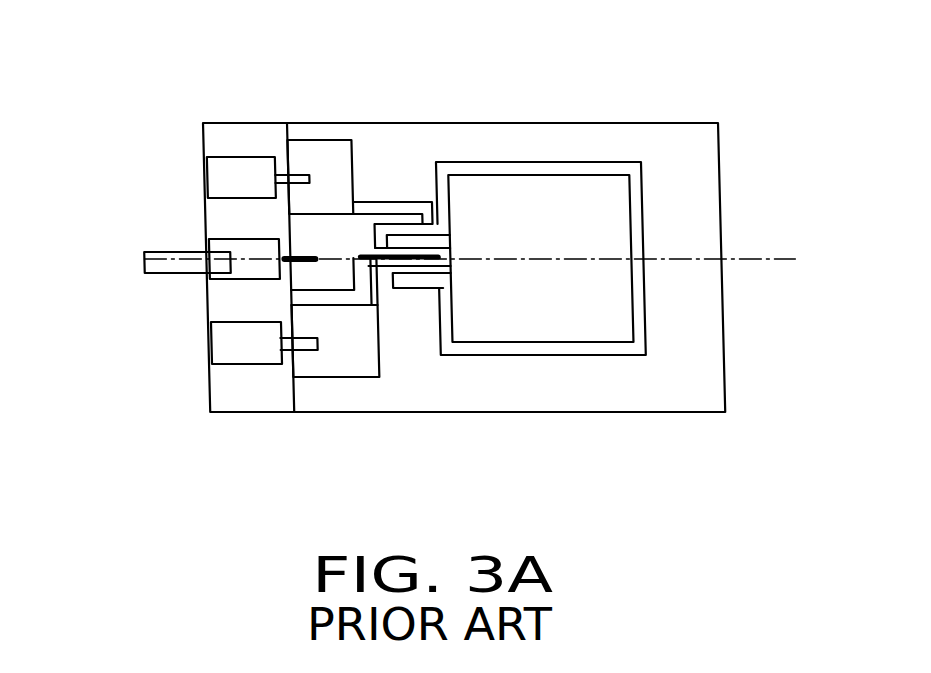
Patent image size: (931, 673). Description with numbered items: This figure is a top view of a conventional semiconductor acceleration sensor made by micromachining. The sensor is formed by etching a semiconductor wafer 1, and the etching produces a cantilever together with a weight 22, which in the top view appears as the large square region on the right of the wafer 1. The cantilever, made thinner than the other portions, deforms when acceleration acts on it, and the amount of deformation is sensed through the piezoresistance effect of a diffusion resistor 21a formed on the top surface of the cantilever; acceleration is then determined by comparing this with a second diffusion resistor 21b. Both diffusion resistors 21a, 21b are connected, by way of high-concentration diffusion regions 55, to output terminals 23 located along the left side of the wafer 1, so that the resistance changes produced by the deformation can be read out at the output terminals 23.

The semiconductor wafer 1 is at (701, 370).
The diffusion resistor 21a is at (391, 290).
The diffusion resistor 21b is at (394, 200).
The weight 22 is at (572, 207).
The output terminals 23 is at (243, 172).
The high-concentration diffusion regions 55 is at (313, 367).